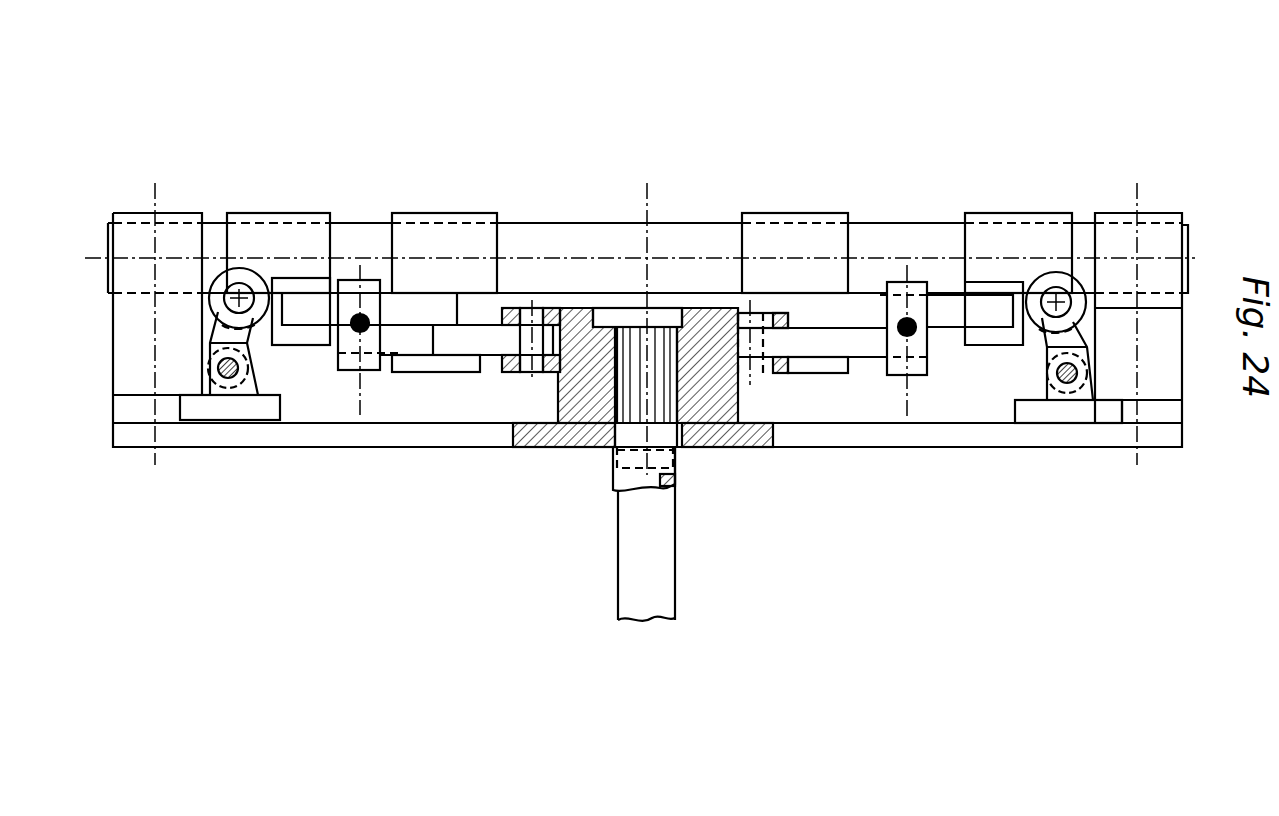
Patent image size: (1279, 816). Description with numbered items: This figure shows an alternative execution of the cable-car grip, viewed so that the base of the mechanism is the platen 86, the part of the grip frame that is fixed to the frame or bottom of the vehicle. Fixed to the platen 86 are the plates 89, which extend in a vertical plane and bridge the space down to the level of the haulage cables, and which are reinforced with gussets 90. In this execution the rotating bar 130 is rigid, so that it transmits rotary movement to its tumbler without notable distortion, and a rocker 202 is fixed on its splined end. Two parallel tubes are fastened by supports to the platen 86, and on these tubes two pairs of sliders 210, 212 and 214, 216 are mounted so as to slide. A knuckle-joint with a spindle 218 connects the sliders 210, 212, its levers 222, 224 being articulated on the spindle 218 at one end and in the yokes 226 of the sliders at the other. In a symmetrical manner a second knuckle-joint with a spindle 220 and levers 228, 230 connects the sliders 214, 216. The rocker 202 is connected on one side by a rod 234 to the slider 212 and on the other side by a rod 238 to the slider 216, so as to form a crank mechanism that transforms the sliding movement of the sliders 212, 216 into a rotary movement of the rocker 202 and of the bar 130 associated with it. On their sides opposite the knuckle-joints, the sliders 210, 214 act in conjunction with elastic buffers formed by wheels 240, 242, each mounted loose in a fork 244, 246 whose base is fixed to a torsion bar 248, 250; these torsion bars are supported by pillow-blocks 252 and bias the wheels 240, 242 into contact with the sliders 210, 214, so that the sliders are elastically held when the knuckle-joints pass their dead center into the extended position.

The platen 86 is at (925, 432).
The plates 89 is at (648, 585).
The gussets 90 is at (535, 447).
The rotating bar 130 is at (660, 463).
The rocker 202 is at (575, 313).
The slider 210 is at (249, 230).
The slider 212 is at (457, 230).
The slider 214 is at (1013, 243).
The slider 216 is at (783, 230).
The spindle 218 is at (350, 280).
The spindle 220 is at (895, 287).
The lever 222 is at (318, 300).
The lever 224 is at (395, 343).
The yokes 226 is at (443, 362).
The lever 228 is at (942, 307).
The lever 230 is at (857, 337).
The rod 234 is at (495, 340).
The rod 238 is at (787, 347).
The wheel 240 is at (217, 281).
The wheel 242 is at (1072, 283).
The fork 244 is at (247, 333).
The fork 246 is at (1047, 340).
The torsion bar 248 is at (223, 380).
The torsion bar 250 is at (1073, 377).
The pillow-blocks 252 is at (247, 392).